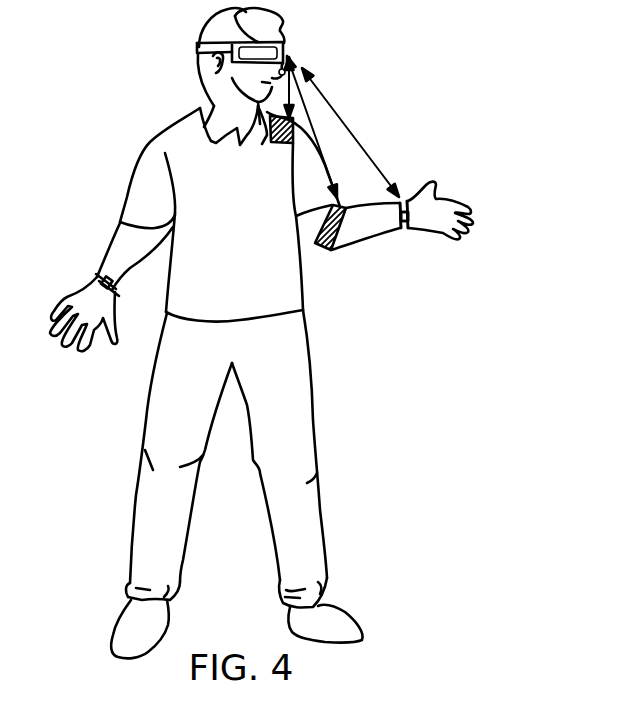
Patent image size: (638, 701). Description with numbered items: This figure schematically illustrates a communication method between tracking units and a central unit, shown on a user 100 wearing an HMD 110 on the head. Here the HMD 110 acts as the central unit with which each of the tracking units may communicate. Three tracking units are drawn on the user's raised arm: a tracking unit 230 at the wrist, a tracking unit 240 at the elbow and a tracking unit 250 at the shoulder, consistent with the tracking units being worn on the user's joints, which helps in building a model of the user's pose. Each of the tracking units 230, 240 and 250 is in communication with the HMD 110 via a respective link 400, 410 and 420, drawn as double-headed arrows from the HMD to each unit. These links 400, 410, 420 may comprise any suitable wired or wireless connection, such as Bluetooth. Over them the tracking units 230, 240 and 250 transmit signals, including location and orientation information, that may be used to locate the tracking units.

The user 100 is at (122, 478).
The HMD 110 is at (198, 45).
The third pair of tracking units 230 is at (408, 230).
The fourth pair of tracking units 240 is at (323, 251).
The fifth pair of tracking units 250 is at (273, 146).
The link 400 is at (381, 169).
The link 410 is at (316, 147).
The link 420 is at (291, 99).